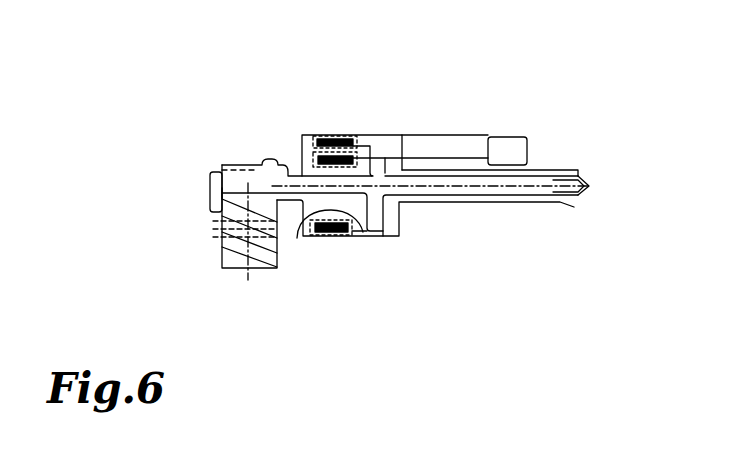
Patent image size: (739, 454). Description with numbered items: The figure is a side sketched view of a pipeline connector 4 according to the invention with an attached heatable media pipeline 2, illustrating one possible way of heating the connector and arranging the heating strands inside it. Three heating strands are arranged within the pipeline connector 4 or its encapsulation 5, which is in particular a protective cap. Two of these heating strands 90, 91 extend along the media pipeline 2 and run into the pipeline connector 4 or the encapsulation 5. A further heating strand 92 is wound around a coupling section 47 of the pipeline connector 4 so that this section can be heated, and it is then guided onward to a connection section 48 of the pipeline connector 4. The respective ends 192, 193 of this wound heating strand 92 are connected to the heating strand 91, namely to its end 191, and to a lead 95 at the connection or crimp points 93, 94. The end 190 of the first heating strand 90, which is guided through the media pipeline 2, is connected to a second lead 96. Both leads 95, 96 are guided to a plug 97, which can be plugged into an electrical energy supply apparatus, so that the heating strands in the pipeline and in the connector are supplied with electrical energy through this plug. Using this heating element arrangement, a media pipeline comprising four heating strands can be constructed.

The media pipeline 2 is at (551, 170).
The pipeline connector 4 is at (281, 108).
The encapsulation 5 is at (367, 133).
The coupling section 47 is at (215, 248).
The connection section 48 is at (390, 203).
The first heating strand 90 is at (579, 170).
The heating strand 91 is at (540, 204).
The further heating strand 92 is at (214, 172).
The connection or crimp point 93 is at (333, 235).
The connection or crimp point 94 is at (303, 134).
The lead 95 is at (423, 158).
The second lead 96 is at (453, 137).
The plug 97 is at (515, 150).
The end of the first heating strand 190 is at (357, 145).
The end of the heating strand 191 is at (365, 236).
The end of the heating strand 192 is at (346, 135).
The end of the heating strand 193 is at (303, 203).